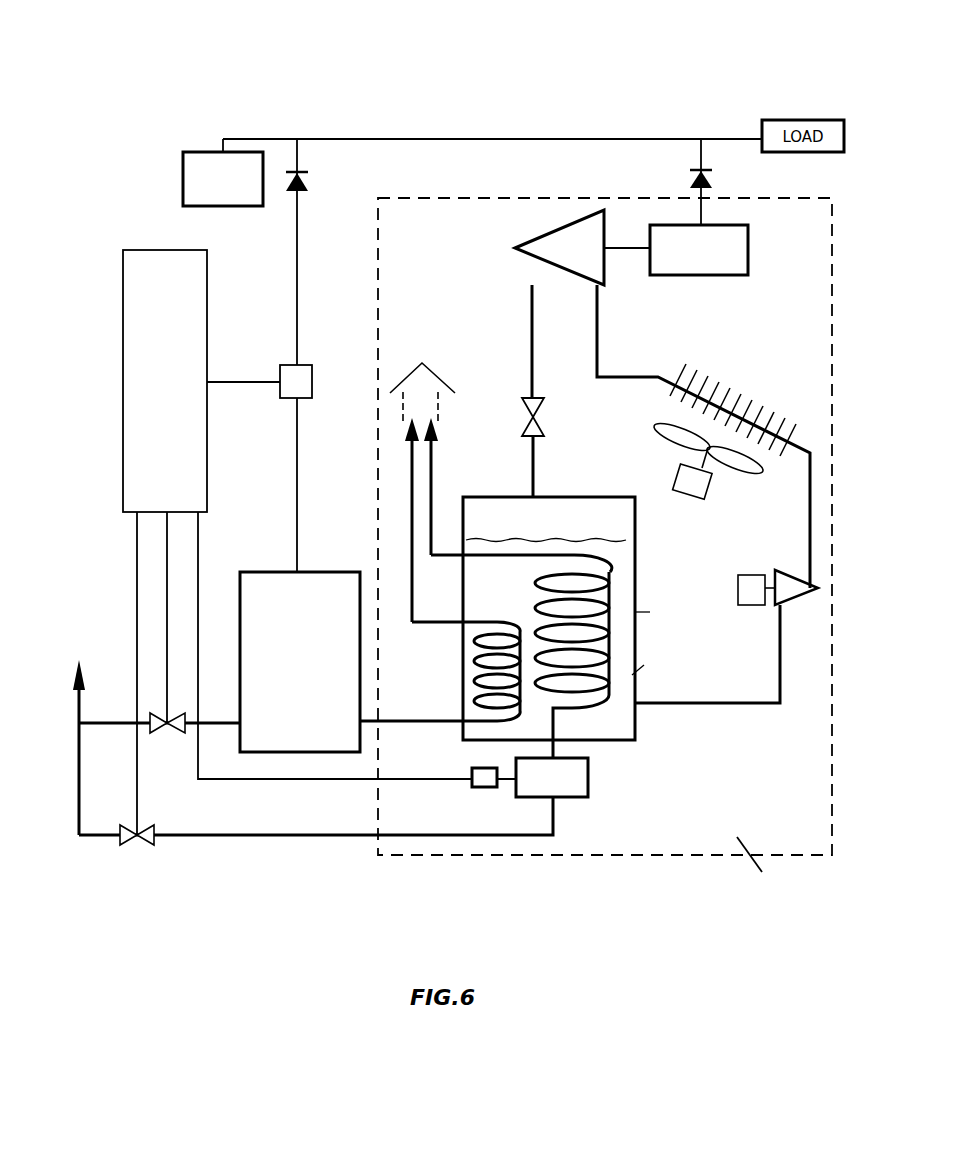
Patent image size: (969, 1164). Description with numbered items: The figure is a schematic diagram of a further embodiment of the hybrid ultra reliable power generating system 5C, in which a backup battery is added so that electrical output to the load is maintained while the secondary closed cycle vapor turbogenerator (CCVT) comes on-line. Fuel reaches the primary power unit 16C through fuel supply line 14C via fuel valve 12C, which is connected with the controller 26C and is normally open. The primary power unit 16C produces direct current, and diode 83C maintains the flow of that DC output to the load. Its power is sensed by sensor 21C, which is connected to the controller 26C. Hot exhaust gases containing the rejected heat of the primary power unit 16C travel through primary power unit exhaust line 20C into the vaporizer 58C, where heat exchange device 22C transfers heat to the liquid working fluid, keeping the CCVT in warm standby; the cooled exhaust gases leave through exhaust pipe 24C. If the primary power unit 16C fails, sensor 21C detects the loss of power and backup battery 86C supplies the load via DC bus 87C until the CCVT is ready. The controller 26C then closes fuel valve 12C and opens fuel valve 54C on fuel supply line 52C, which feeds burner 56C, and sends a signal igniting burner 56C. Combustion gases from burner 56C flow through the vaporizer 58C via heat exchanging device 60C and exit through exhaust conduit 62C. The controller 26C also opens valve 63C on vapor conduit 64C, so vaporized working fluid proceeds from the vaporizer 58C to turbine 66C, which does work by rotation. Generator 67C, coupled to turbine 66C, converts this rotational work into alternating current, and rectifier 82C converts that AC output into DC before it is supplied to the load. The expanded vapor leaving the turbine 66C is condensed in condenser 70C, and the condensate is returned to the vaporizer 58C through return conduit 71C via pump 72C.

The hybrid ultra reliable power generating system 5C is at (399, 36).
The backup battery 86C is at (186, 150).
The diode 83C is at (305, 174).
The DC bus 87C is at (556, 138).
The rectifier 82C is at (693, 172).
The controller 26C is at (170, 250).
The sensor 21C is at (307, 365).
The primary power unit 16C is at (307, 572).
The fuel supply line 14C is at (82, 711).
The fuel valve 12C is at (159, 739).
The fuel supply line 52C is at (265, 838).
The fuel valve 54C is at (137, 850).
The primary power unit exhaust line 20C is at (381, 723).
The vaporizer 58C is at (604, 497).
The heat exchanging device 60C is at (565, 556).
The heat exchange device 22C is at (484, 625).
The exhaust pipe 24C is at (412, 560).
The exhaust conduit 62C is at (431, 458).
The turbine 66C is at (516, 246).
The generator 67C is at (748, 276).
The vapor conduit 64C is at (534, 306).
The valve 63C is at (540, 401).
The condenser 70C is at (782, 436).
The pump 72C is at (782, 606).
The return conduit 71C is at (727, 705).
The burner 56C is at (588, 771).